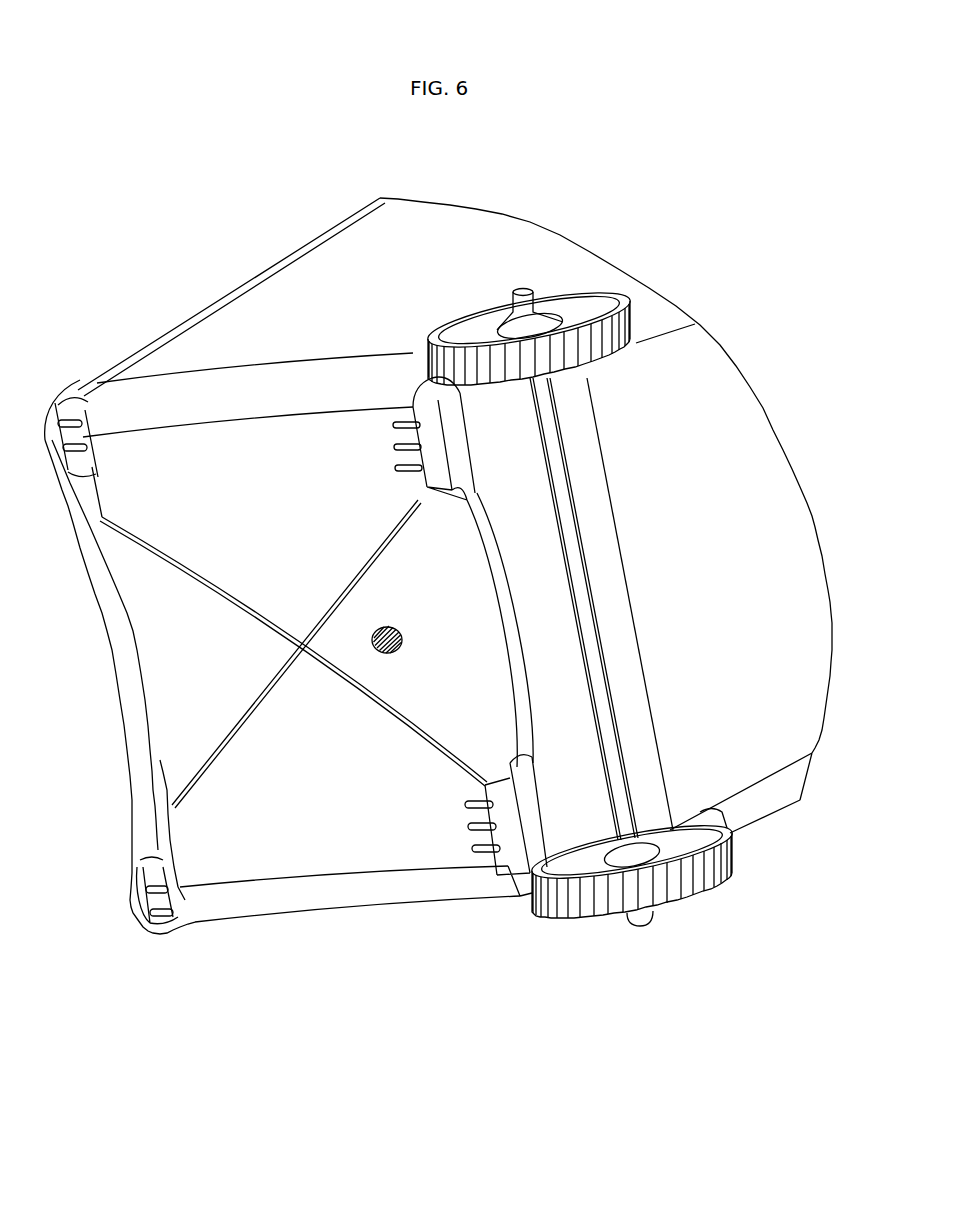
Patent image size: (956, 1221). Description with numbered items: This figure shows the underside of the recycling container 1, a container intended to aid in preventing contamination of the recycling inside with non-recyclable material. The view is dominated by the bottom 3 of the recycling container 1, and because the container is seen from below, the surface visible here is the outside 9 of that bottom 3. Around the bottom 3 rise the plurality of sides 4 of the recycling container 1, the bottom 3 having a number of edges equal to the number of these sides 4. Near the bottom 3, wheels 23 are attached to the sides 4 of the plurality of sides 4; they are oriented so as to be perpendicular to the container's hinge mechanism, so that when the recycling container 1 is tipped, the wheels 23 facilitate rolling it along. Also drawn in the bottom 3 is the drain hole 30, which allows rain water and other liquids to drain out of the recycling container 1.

The recycling container 1 is at (836, 980).
The bottom 3 is at (296, 566).
The outside 9 is at (282, 566).
The plurality of sides 4 is at (586, 515).
The wheels 23 is at (602, 288).
The drain hole 30 is at (396, 622).